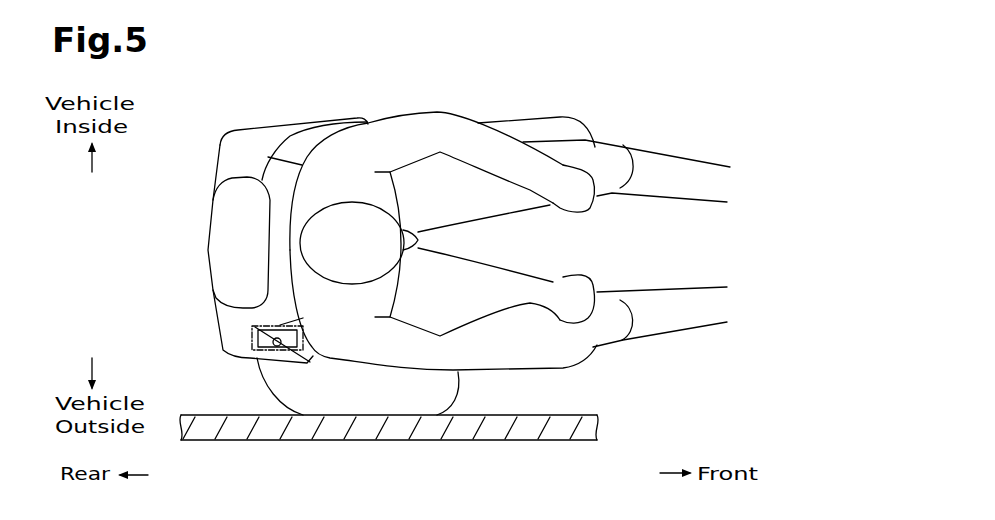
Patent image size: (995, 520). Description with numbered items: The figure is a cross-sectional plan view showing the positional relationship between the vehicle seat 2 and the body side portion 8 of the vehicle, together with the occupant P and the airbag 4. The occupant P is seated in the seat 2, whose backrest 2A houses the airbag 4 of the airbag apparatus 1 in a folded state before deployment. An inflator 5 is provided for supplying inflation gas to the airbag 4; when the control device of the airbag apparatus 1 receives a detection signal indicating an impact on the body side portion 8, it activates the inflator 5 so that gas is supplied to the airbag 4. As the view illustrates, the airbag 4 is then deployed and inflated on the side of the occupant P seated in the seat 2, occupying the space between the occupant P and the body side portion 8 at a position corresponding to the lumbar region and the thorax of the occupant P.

The airbag apparatus 1 is at (250, 336).
The seat 2 is at (248, 266).
The backrest 2A is at (216, 178).
The airbag 4 is at (463, 392).
The inflator 5 is at (272, 362).
The body side portion 8 is at (516, 440).
The occupant P is at (412, 117).